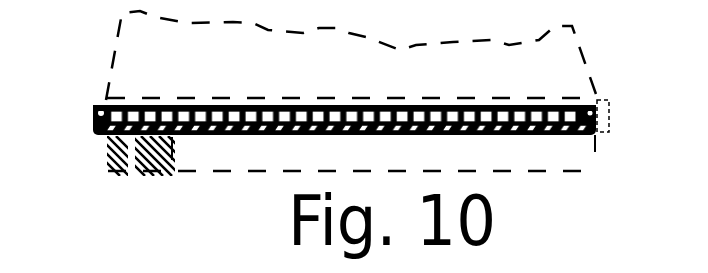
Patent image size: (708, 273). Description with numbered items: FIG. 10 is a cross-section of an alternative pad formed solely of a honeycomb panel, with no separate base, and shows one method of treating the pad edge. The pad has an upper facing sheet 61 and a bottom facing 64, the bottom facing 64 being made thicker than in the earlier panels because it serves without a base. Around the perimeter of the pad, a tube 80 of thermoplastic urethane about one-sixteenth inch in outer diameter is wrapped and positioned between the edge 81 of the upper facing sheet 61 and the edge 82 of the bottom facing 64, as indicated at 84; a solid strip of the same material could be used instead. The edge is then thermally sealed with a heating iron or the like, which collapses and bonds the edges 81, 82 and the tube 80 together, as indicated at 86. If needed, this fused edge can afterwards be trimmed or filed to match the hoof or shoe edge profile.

The upper facing sheet 61 is at (305, 107).
The bottom facing 64 is at (373, 134).
The tube 80 is at (93, 123).
The edge of upper facing sheet 81 is at (93, 107).
The edge of lower facing sheet 82 is at (92, 135).
The tube position between facing sheet edges 84 is at (84, 95).
The thermally sealed edge 86 is at (601, 108).